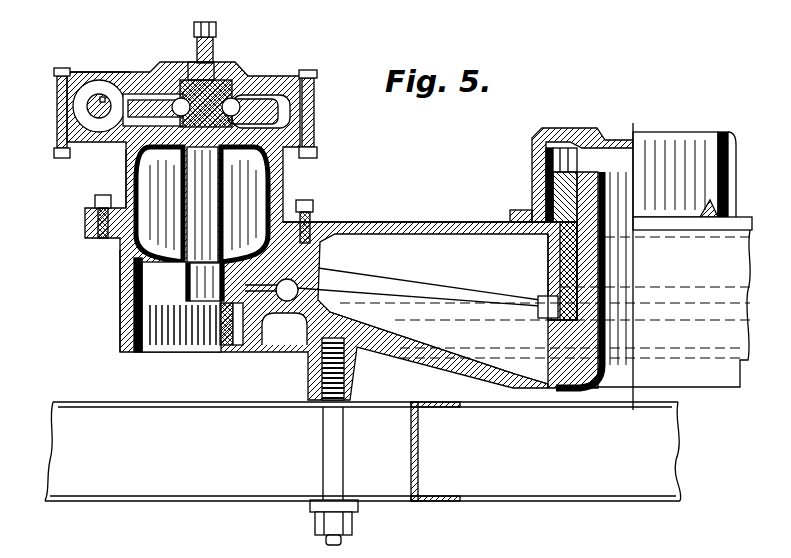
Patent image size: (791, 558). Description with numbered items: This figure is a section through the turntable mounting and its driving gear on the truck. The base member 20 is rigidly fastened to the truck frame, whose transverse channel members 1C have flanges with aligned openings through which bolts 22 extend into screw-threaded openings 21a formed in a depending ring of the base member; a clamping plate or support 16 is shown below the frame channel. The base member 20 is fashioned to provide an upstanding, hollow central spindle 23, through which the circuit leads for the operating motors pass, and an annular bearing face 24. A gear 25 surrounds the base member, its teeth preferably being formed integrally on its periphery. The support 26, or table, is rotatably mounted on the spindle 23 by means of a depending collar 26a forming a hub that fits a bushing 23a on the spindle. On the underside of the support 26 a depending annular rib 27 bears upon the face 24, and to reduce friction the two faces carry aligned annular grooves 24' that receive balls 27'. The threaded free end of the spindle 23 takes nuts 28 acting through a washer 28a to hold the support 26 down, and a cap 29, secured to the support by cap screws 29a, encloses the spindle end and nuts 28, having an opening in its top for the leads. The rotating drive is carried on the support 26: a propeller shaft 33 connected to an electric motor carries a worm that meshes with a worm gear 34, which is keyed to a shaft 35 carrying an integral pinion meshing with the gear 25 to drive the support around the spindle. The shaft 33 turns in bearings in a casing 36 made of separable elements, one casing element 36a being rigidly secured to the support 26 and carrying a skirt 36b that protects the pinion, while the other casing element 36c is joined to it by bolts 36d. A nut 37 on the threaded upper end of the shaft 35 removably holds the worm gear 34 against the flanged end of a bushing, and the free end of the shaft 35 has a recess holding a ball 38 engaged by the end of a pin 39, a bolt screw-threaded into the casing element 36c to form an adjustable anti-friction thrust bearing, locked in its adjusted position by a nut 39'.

The base plate 16 is at (242, 500).
The transverse members 1C is at (420, 472).
The base member 20 is at (470, 372).
The screw-threaded openings 21a is at (357, 385).
The bolts 22 is at (322, 458).
The spindle 23 is at (606, 277).
The bushing 23a is at (560, 285).
The annular bearing face 24 is at (285, 332).
The annular grooves 24' is at (309, 295).
The gear 25 is at (247, 342).
The support 26 is at (355, 222).
The depending collar 26a is at (548, 255).
The depending annular rib 27 is at (427, 287).
The balls 27' is at (302, 295).
The nuts 28 is at (532, 168).
The washer 28a is at (548, 185).
The cap 29 is at (710, 132).
The cap screws 29a is at (732, 206).
The propeller shaft 33 is at (74, 108).
The worm gear 34 is at (262, 100).
The shaft 35 is at (212, 208).
The casing 36 is at (127, 160).
The casing element 36a is at (126, 180).
The skirt 36b is at (120, 288).
The casing element 36c is at (107, 72).
The bolts 36d is at (322, 70).
The nut 37 is at (229, 82).
The ball 38 is at (190, 75).
The pin 39 is at (226, 46).
The nut 39' is at (222, 25).